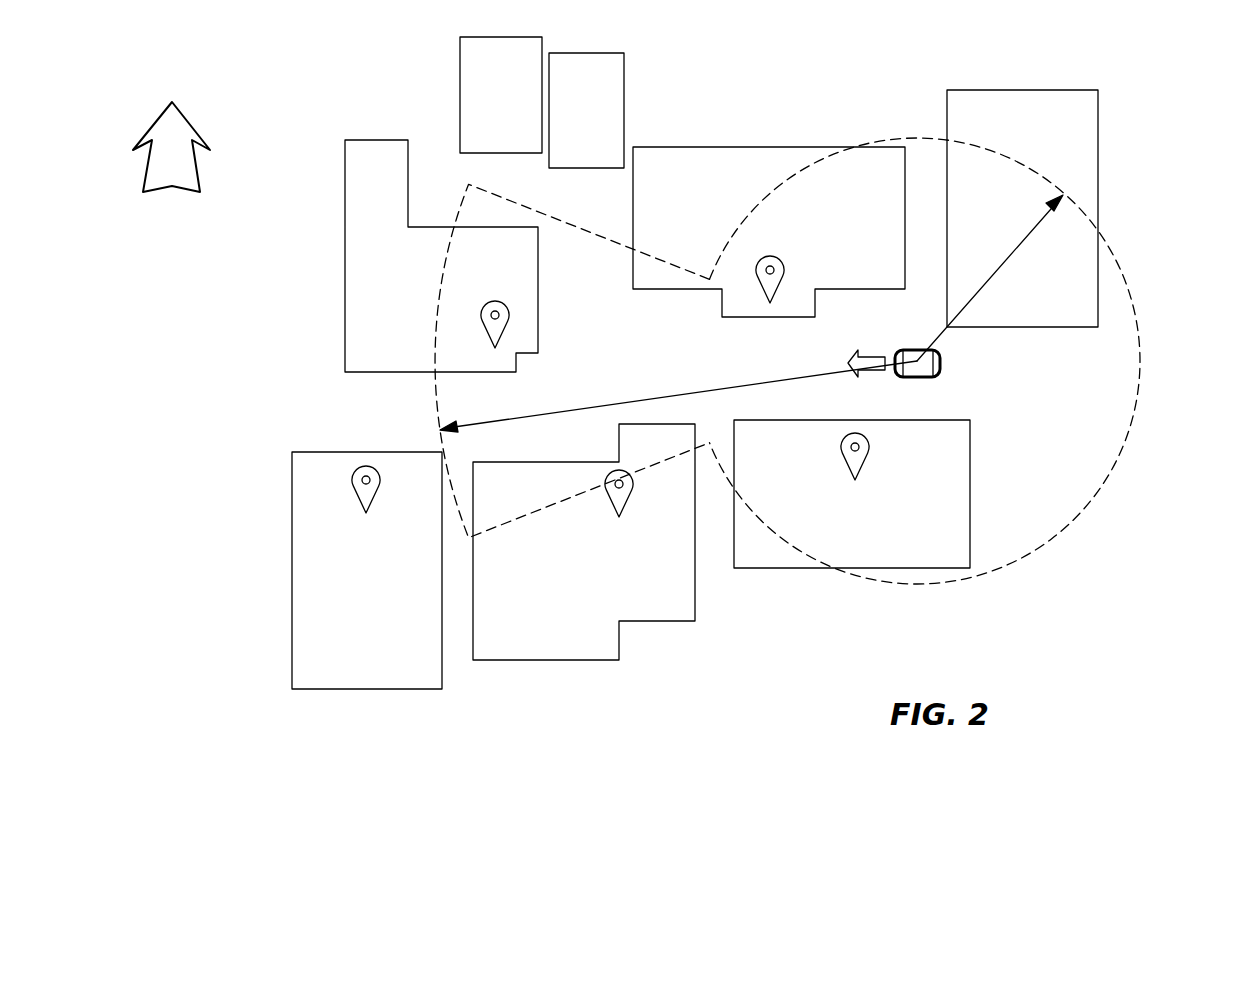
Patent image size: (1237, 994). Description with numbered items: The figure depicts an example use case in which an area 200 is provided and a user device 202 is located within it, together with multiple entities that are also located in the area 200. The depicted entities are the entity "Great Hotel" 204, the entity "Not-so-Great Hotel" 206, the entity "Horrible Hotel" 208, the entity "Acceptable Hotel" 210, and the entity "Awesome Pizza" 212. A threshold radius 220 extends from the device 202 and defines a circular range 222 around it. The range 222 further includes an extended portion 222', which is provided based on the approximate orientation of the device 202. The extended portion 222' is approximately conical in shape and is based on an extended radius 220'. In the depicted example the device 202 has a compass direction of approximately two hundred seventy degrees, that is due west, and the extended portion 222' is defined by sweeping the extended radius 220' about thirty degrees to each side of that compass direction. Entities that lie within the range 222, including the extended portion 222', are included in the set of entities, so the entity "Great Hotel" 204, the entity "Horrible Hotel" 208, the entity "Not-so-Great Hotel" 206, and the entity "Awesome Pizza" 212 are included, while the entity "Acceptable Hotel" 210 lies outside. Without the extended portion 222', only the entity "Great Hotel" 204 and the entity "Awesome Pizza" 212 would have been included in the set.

The area 200 is at (334, 82).
The user device 202 is at (943, 363).
The entity "Great Hotel" 204 is at (760, 284).
The entity "Not-so-Great Hotel" 206 is at (629, 472).
The entity "Horrible Hotel" 208 is at (504, 330).
The entity "Acceptable Hotel" 210 is at (356, 470).
The entity "Awesome Pizza" 212 is at (869, 449).
The threshold radius 220 is at (1000, 278).
The extended radius 220' is at (678, 391).
The range 222 is at (967, 361).
The extended portion 222' is at (572, 357).